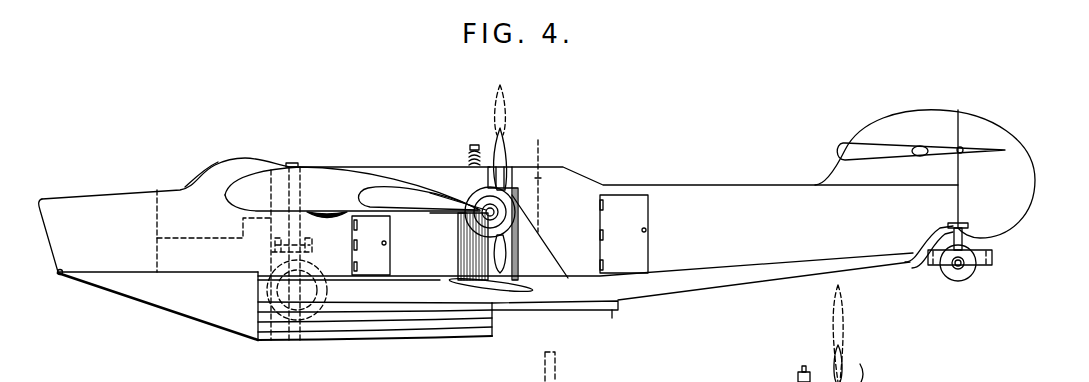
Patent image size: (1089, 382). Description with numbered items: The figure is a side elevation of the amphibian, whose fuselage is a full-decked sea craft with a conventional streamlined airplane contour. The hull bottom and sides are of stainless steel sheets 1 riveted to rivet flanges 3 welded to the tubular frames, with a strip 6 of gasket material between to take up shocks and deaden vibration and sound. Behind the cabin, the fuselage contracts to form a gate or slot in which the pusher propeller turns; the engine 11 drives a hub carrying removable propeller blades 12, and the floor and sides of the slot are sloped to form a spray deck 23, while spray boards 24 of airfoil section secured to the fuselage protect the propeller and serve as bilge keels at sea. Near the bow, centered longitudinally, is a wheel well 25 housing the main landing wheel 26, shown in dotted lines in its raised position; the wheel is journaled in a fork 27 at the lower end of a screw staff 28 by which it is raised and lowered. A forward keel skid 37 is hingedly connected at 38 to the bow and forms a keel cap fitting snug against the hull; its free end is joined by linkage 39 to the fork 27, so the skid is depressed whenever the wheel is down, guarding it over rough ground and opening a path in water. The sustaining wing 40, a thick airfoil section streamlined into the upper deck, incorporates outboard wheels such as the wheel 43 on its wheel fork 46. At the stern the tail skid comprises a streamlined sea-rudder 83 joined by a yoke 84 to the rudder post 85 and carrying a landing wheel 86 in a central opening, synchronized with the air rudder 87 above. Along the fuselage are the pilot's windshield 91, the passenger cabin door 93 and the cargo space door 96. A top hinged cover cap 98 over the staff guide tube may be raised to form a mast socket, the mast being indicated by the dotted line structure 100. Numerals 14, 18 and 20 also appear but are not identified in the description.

The stainless steel sheets 1 is at (612, 184).
The rivet flanges 3 is at (537, 178).
The strip of gasket material 6 is at (501, 86).
The engine 11 is at (469, 152).
The propeller blades 12 is at (508, 139).
The propeller (lower figure) 14 is at (879, 373).
The hull step 18 is at (612, 318).
The propeller blade (lower figure) 20 is at (856, 333).
The spray deck 23 is at (480, 260).
The spray boards 24 is at (532, 288).
The wheel well 25 is at (325, 341).
The main landing wheel 26 is at (311, 343).
The fork 27 is at (284, 290).
The screw staff 28 is at (309, 243).
The forward keel skid 37 is at (152, 307).
The hinge connection 38 is at (58, 276).
The linkage 39 is at (258, 342).
The sustaining wing 40 is at (350, 182).
The wheel 43 is at (516, 206).
The wheel fork 46 is at (460, 246).
The sea-rudder 83 is at (975, 268).
The yoke 84 is at (963, 236).
The rudder post 85 is at (944, 228).
The landing wheel 86 is at (948, 273).
The air rudder 87 is at (1018, 165).
The windshield 91 is at (203, 168).
The door 93 is at (394, 241).
The door 96 is at (650, 224).
The top hinged cover cap 98 is at (289, 163).
The dotted line structure 100 is at (560, 374).